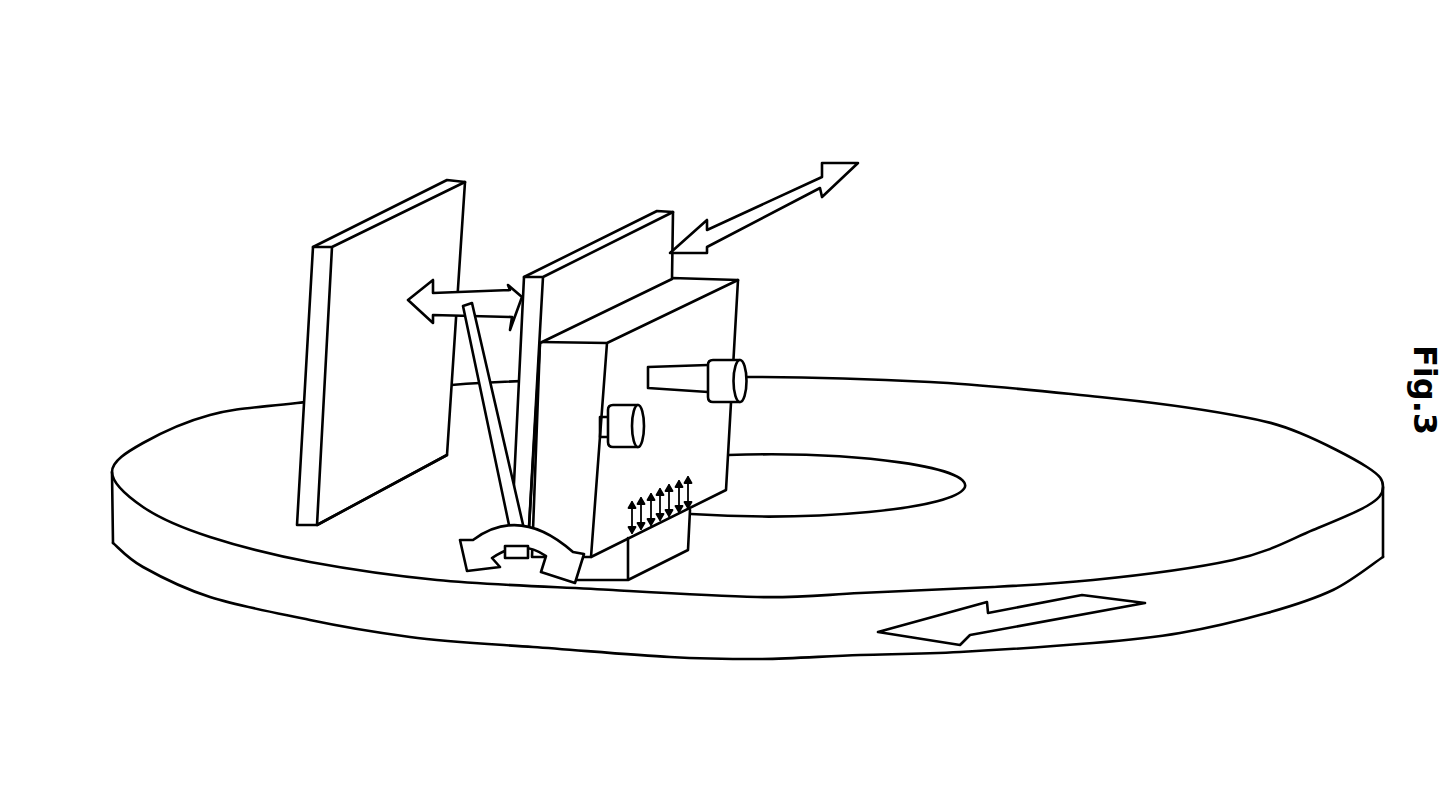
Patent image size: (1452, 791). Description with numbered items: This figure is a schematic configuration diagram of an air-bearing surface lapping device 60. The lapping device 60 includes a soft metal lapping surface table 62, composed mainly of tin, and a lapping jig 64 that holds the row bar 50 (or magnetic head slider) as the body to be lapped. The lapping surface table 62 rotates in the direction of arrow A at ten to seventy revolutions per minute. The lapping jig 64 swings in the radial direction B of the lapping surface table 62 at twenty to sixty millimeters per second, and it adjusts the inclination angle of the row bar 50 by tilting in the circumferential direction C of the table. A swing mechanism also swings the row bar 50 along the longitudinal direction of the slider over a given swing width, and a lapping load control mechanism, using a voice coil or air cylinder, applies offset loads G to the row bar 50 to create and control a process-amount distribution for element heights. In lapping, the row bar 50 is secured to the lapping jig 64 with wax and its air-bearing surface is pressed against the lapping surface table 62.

The lapping device 60 is at (654, 96).
The lapping surface table 62 is at (1160, 422).
The lapping jig 64 is at (725, 330).
The row bar 50 is at (660, 548).
The direction of arrow A is at (1067, 622).
The radial direction B is at (768, 200).
The circumferential direction C is at (480, 291).
The offset loads G is at (700, 486).